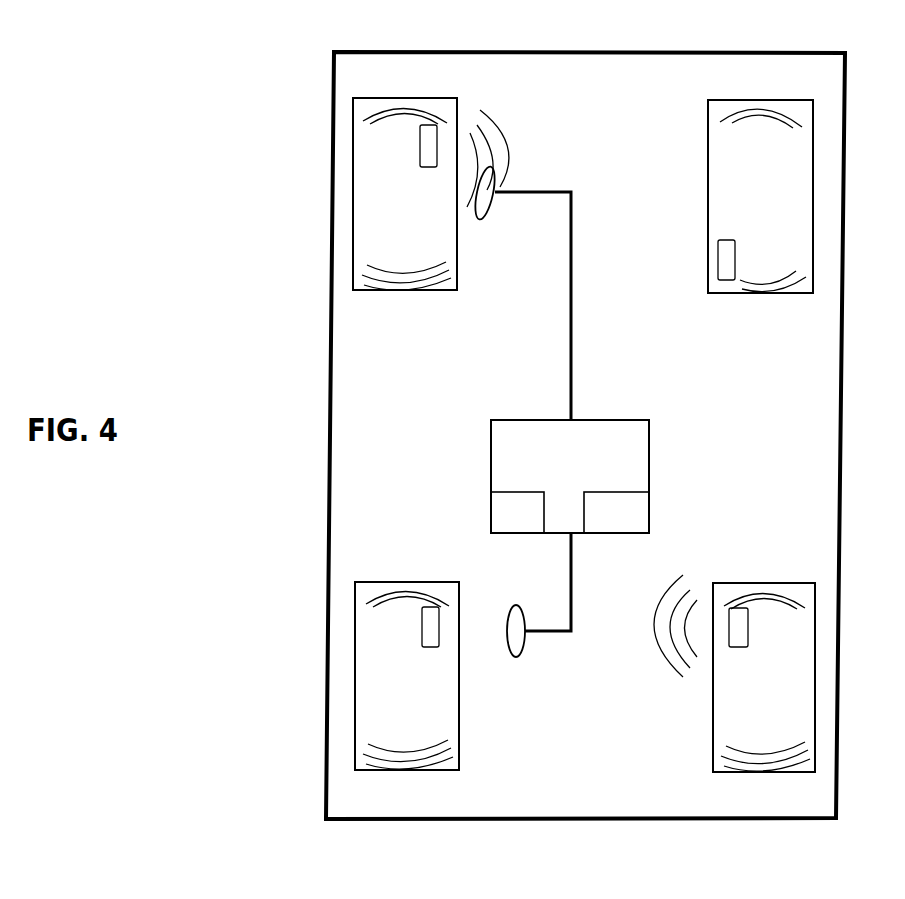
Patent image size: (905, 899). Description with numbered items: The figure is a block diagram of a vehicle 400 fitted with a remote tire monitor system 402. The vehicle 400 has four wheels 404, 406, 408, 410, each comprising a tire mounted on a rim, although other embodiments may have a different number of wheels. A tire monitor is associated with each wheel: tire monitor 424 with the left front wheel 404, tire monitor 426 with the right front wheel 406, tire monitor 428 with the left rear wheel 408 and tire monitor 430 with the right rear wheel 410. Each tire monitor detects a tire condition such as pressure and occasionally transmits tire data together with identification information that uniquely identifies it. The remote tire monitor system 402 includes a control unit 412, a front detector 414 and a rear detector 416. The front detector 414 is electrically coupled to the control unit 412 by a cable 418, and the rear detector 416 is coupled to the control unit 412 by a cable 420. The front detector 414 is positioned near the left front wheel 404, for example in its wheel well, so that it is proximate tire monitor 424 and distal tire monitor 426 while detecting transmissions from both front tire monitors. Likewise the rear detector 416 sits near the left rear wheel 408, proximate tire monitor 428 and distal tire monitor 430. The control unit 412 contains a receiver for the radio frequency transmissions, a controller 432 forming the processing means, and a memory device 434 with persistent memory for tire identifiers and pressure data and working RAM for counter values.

The vehicle 400 is at (332, 813).
The remote tire monitor system 402 is at (296, 91).
The wheel 404 is at (447, 283).
The wheel 406 is at (752, 293).
The wheel 408 is at (370, 587).
The wheel 410 is at (748, 590).
The control unit 412 is at (502, 467).
The front detector 414 is at (491, 217).
The rear detector 416 is at (513, 647).
The cable 418 is at (575, 395).
The cable 420 is at (568, 542).
The tire monitor 424 is at (418, 167).
The tire monitor 426 is at (753, 230).
The tire monitor 428 is at (435, 642).
The tire monitor 430 is at (738, 640).
The controller 432 is at (502, 515).
The memory device 434 is at (643, 519).